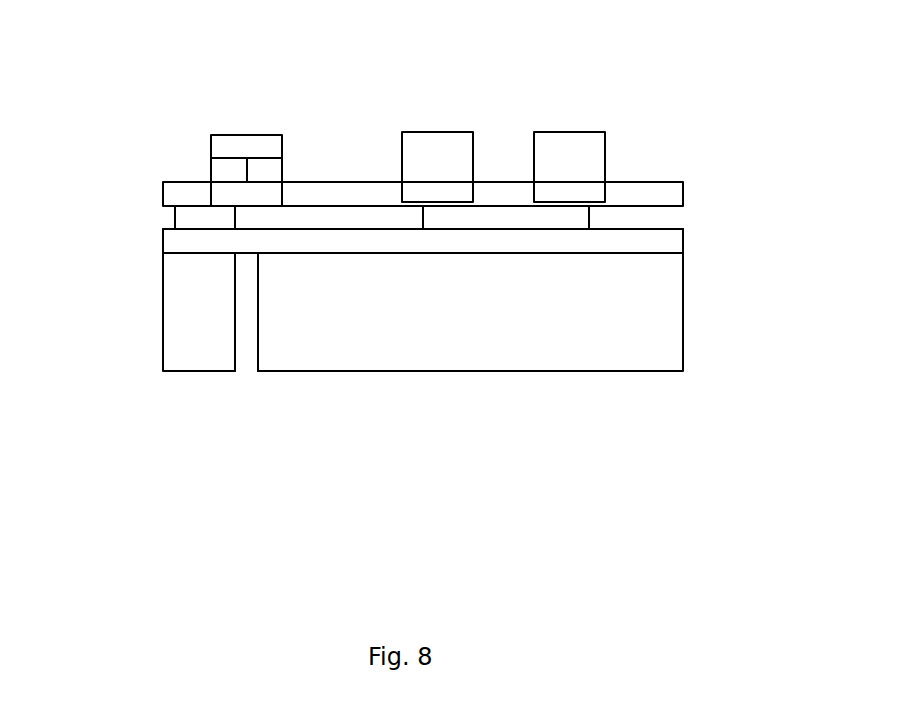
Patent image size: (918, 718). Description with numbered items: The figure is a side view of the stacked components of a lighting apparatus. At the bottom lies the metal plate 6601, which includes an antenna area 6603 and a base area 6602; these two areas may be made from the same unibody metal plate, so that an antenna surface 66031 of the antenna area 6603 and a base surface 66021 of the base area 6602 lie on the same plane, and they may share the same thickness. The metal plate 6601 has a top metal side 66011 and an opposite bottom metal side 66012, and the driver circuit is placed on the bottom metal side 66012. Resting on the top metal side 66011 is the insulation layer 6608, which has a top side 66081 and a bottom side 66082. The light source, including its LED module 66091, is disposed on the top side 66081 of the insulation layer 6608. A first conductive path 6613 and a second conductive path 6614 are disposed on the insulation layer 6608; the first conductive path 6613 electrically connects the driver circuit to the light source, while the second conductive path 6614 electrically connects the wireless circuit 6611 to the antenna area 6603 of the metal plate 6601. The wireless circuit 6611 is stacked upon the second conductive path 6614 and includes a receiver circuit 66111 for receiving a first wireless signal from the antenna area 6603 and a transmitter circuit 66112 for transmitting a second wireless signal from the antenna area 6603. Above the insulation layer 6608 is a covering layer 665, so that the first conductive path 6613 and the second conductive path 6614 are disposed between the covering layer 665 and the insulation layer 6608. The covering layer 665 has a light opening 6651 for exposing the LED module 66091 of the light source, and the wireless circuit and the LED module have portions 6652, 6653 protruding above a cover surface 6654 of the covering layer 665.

The covering layer 665 is at (638, 202).
The light opening 6651 is at (403, 192).
The protruding portion 6652 is at (460, 150).
The protruding portion 6653 is at (273, 145).
The cover surface 6654 is at (342, 182).
The wireless circuit 6611 is at (223, 135).
The receiver circuit 66111 is at (237, 175).
The transmitter circuit 66112 is at (283, 182).
The first conductive path 6613 is at (485, 222).
The second conductive path 6614 is at (193, 218).
The LED module 66091 is at (578, 148).
The insulation layer 6608 is at (683, 240).
The top side 66081 is at (680, 228).
The bottom side 66082 is at (675, 253).
The metal plate 6601 is at (600, 347).
The top metal side 66011 is at (405, 253).
The bottom metal side 66012 is at (363, 375).
The base area 6602 is at (467, 333).
The base surface 66021 is at (620, 253).
The antenna area 6603 is at (190, 317).
The antenna surface 66031 is at (193, 253).